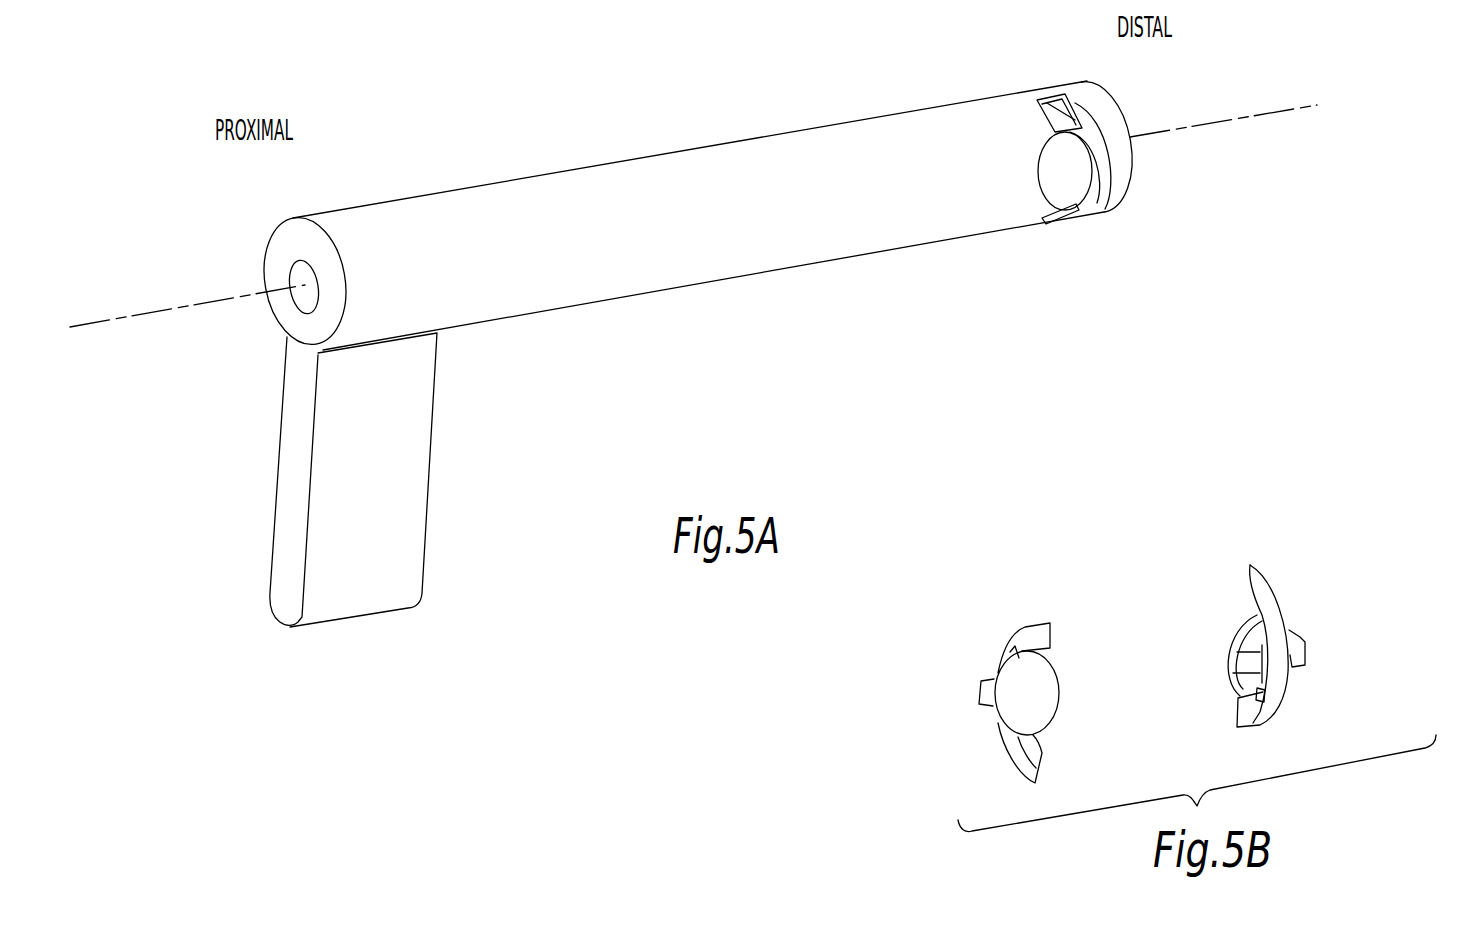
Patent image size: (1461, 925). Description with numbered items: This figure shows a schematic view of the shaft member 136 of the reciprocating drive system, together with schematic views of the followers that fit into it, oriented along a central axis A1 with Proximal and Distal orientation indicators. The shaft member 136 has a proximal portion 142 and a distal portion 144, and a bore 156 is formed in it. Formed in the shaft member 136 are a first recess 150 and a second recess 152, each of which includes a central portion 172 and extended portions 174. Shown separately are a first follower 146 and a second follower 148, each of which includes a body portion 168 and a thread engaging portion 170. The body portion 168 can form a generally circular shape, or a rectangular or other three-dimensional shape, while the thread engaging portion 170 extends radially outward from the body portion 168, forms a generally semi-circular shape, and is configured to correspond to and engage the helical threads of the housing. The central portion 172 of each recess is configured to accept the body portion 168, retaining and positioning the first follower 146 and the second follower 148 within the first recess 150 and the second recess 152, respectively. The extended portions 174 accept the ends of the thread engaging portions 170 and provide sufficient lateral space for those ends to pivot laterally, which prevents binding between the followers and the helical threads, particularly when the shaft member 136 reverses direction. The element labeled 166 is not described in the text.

In FIG. 5A, the central axis A1 is at (160, 312).
In FIG. 5A, the shaft member 136 is at (677, 170).
In FIG. 5A, the proximal portion 142 is at (1030, 127).
In FIG. 5A, the distal portion 144 is at (362, 223).
In FIG. 5B, the first follower 146 is at (1328, 612).
In FIG. 5B, the second follower 148 is at (1134, 688).
In FIG. 5A, the first recess 150 is at (1043, 170).
In FIG. 5A, the second recess 152 is at (767, 135).
In FIG. 5A, the bore 156 is at (297, 275).
In FIG. 5B, the upper wing 166 is at (1043, 633).
In FIG. 5B, the body portion 168 is at (1013, 713).
In FIG. 5B, the thread engaging portion 170 is at (978, 687).
In FIG. 5A, the central portion 172 is at (1077, 185).
In FIG. 5A, the extended portions 174 is at (1073, 95).